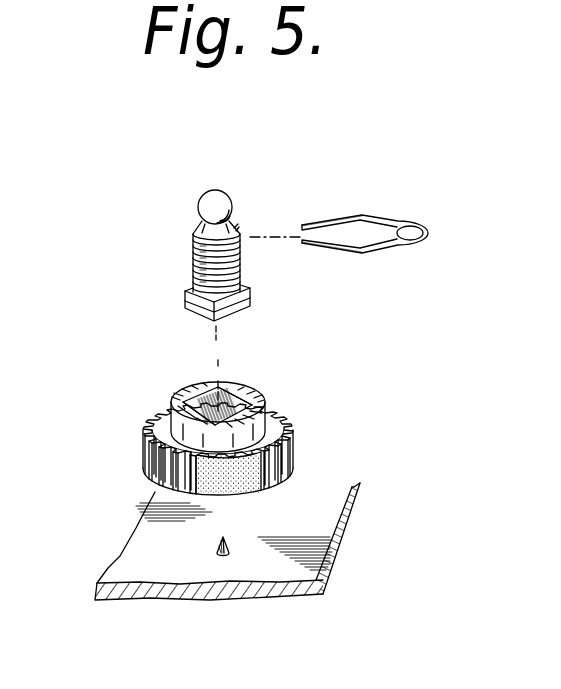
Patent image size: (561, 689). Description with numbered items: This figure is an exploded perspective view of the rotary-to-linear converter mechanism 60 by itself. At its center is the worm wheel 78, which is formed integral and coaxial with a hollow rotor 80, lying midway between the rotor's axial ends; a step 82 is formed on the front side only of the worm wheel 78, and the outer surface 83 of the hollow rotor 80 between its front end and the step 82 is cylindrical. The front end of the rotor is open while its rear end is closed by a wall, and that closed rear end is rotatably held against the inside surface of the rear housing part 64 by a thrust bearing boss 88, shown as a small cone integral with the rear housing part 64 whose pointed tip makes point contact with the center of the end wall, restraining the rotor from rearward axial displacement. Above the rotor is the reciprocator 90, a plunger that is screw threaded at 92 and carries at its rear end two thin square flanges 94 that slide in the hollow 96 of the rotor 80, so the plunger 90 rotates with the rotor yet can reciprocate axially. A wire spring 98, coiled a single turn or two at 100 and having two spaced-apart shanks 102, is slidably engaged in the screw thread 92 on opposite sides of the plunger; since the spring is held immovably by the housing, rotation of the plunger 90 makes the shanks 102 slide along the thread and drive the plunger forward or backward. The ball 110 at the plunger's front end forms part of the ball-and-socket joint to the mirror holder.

The rotary-to-linear converter mechanism 60 is at (139, 194).
The ball 110 is at (211, 190).
The reciprocator 90 is at (202, 235).
The screw thread 92 is at (192, 263).
The flanges 94 is at (186, 308).
The wire spring 98 is at (403, 231).
The coil 100 is at (433, 230).
The shanks 102 is at (377, 222).
The hollow rotor 80 is at (208, 431).
The step 82 is at (291, 412).
The outer surface 83 is at (143, 439).
The worm wheel 78 is at (147, 465).
The hollow 96 is at (248, 403).
The rear housing part 64 is at (219, 595).
The thrust bearing boss 88 is at (228, 542).